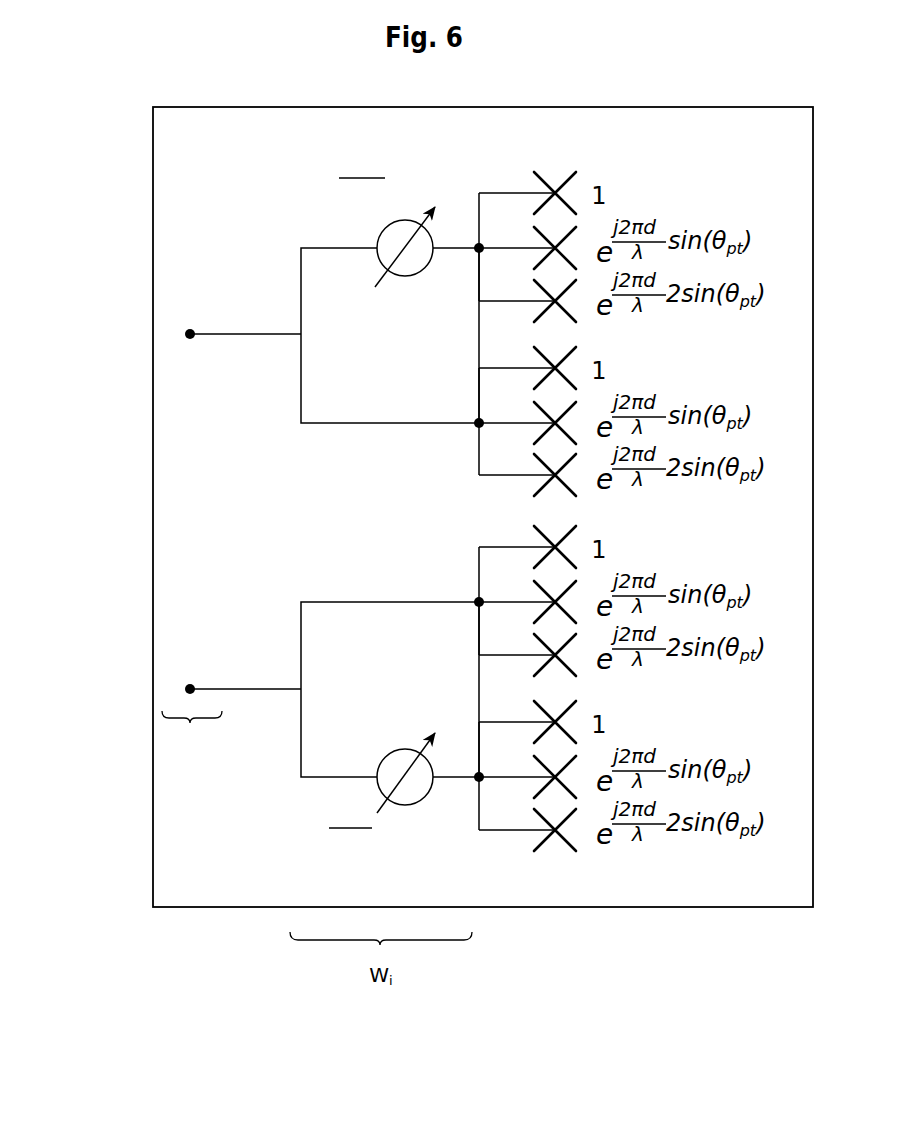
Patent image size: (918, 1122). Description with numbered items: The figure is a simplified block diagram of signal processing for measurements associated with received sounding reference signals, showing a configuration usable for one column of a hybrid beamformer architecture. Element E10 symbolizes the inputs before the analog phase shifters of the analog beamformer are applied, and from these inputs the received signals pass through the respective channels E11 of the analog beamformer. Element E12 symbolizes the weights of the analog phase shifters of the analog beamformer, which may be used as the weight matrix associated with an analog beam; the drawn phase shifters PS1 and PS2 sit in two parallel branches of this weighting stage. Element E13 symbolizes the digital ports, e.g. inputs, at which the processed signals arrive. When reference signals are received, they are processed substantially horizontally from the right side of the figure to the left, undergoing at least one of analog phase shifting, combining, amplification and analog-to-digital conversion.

The inputs before application of analog phase shifters E10 is at (479, 248).
The channels through the analog beamformer E11 is at (189, 689).
The weights of analog phase shifters E12 is at (483, 495).
The digital ports E13 is at (194, 676).
The first phase shifter PS1 is at (386, 289).
The second phase shifter PS2 is at (381, 732).